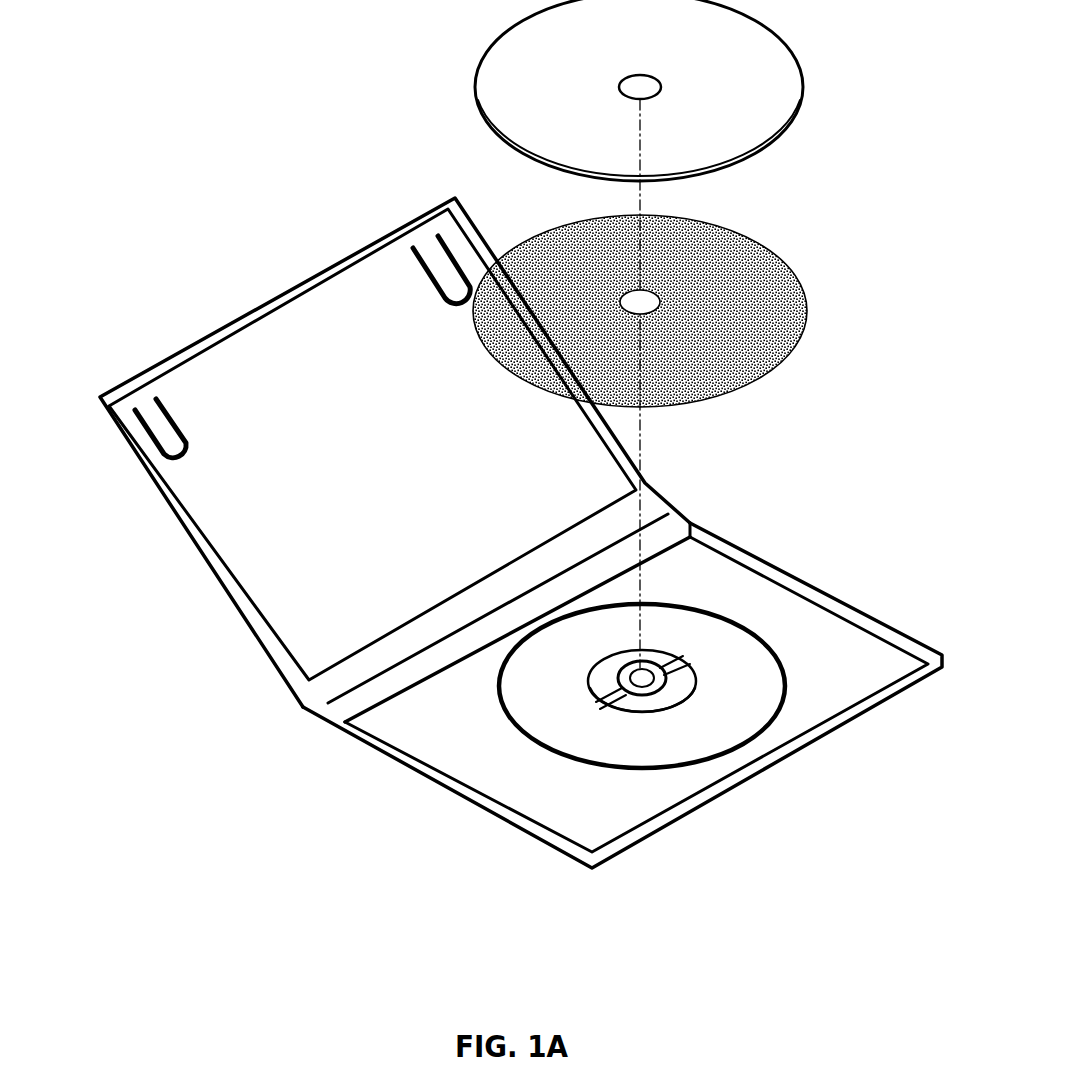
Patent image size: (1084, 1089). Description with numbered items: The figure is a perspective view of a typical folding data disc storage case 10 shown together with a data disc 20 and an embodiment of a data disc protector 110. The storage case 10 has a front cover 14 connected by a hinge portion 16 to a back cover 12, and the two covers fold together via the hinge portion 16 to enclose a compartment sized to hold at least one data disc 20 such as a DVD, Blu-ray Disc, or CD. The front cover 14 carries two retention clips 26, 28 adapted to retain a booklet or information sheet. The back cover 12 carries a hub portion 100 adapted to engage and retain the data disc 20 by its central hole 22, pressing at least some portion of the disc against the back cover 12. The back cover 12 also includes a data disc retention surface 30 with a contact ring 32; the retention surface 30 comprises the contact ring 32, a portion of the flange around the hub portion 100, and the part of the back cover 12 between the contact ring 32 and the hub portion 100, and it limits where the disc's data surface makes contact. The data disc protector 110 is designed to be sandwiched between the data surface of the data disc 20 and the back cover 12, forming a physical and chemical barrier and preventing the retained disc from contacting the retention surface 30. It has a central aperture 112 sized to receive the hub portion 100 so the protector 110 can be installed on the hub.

The data disc storage case 10 is at (240, 264).
The back cover 12 is at (527, 798).
The front cover 14 is at (250, 582).
The hinge portion 16 is at (322, 697).
The data disc 20 is at (760, 127).
The central hole 22 is at (650, 80).
The retention clip 26 is at (442, 265).
The retention clip 28 is at (167, 443).
The data disc retention surface 30 is at (718, 645).
The contact ring 32 is at (782, 657).
The hub portion 100 is at (665, 697).
The data disc protector 110 is at (778, 322).
The central aperture 112 is at (662, 305).